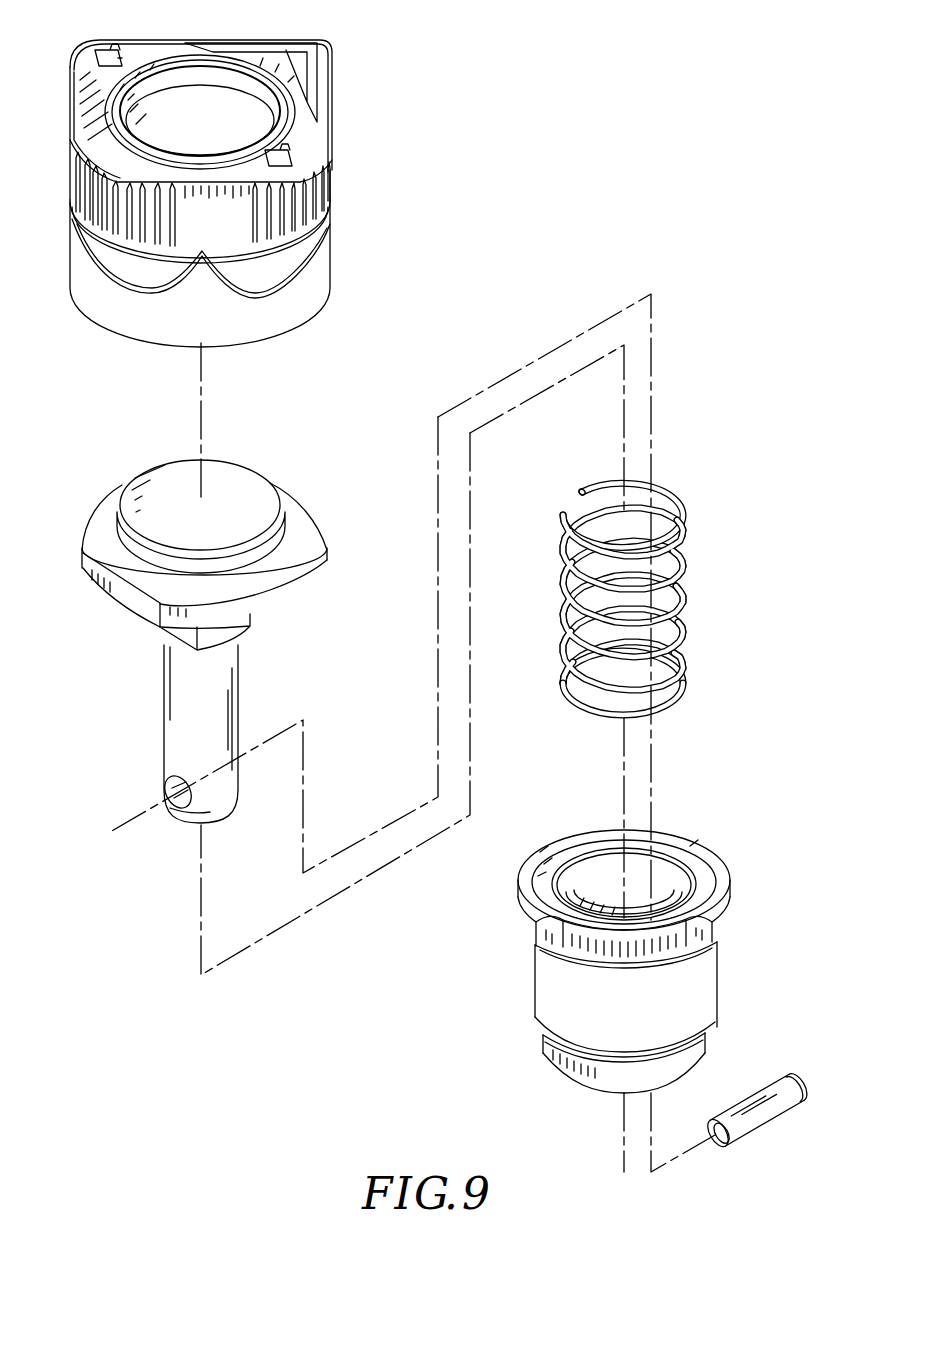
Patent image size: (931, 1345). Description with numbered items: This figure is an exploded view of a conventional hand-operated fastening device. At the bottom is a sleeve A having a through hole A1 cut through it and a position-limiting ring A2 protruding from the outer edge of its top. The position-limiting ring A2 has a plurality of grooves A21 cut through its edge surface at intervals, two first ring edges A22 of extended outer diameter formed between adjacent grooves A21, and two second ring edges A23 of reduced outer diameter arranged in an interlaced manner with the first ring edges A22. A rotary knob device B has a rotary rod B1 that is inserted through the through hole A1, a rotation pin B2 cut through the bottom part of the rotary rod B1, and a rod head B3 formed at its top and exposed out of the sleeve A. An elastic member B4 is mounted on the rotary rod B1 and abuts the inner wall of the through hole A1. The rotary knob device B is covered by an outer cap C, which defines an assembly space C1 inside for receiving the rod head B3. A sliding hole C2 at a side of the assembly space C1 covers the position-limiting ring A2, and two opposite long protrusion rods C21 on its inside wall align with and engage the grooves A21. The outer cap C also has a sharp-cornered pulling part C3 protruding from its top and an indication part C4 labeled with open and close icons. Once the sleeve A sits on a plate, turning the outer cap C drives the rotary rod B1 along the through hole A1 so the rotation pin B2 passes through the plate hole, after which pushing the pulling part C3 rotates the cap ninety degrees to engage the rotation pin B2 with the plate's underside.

The outer cap C is at (286, 176).
The assembly space C1 is at (188, 82).
The sliding hole C2 is at (298, 106).
The long protrusion rods C21 is at (267, 117).
The pulling part C3 is at (308, 58).
The indication part C4 is at (329, 182).
The rotary knob device B is at (446, 815).
The rotary rod B1 is at (217, 695).
The rotation pin B2 is at (762, 1108).
The rod head B3 is at (297, 530).
The elastic member B4 is at (680, 575).
The sleeve A is at (561, 946).
The through hole A1 is at (660, 883).
The position-limiting ring A2 is at (537, 954).
The grooves A21 is at (553, 932).
The first ring edges A22 is at (527, 892).
The second ring edges A23 is at (608, 957).